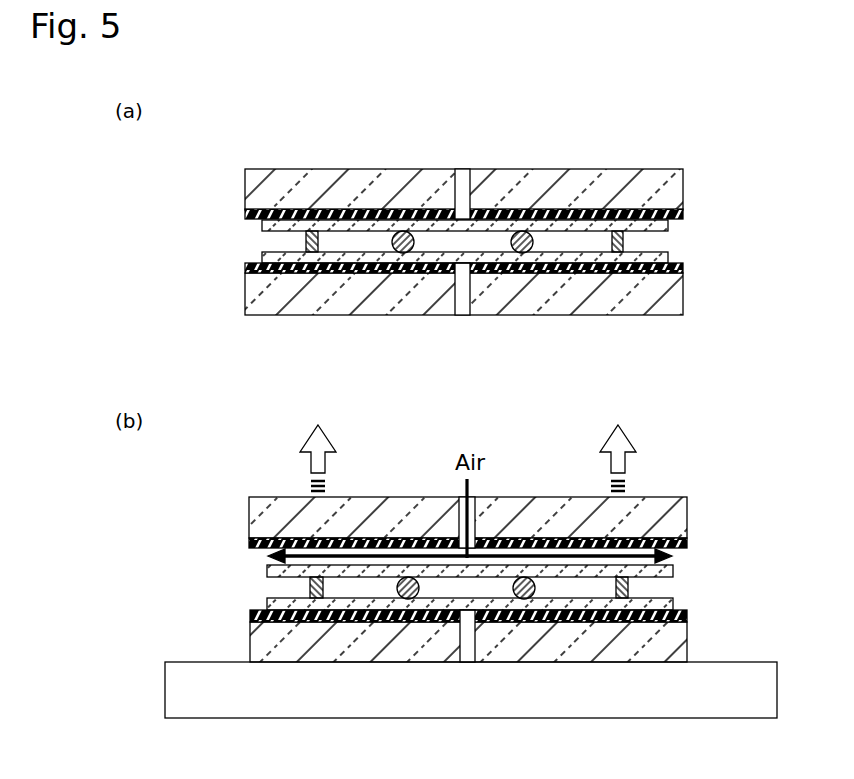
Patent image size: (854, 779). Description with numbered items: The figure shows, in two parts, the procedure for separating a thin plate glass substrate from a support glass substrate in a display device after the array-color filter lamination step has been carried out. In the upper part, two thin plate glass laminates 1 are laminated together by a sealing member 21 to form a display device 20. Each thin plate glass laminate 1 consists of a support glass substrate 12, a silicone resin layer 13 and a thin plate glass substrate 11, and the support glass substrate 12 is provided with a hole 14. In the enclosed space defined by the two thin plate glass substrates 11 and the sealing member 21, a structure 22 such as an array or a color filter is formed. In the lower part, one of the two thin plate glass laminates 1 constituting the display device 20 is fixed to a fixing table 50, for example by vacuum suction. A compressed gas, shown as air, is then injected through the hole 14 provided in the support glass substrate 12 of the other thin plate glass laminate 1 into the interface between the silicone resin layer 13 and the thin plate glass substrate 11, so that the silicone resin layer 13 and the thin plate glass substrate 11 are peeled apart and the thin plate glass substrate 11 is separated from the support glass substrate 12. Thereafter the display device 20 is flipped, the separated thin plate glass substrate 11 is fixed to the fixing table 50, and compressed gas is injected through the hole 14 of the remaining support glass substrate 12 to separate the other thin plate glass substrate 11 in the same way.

The thin plate glass laminate 1 is at (218, 198).
The thin plate glass substrate 11 is at (262, 235).
The support glass substrate 12 is at (683, 181).
The silicone resin layer 13 is at (683, 214).
The hole 14 is at (463, 175).
The display device 20 is at (632, 145).
The sealing member 21 is at (311, 253).
The structure 22 is at (404, 254).
The fixing table 50 is at (764, 693).